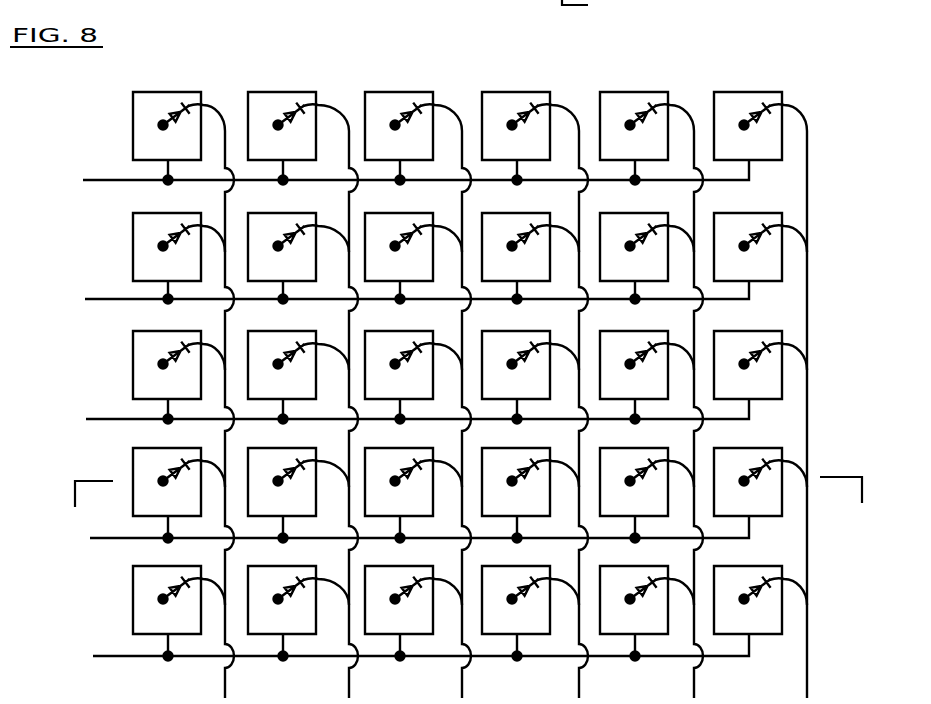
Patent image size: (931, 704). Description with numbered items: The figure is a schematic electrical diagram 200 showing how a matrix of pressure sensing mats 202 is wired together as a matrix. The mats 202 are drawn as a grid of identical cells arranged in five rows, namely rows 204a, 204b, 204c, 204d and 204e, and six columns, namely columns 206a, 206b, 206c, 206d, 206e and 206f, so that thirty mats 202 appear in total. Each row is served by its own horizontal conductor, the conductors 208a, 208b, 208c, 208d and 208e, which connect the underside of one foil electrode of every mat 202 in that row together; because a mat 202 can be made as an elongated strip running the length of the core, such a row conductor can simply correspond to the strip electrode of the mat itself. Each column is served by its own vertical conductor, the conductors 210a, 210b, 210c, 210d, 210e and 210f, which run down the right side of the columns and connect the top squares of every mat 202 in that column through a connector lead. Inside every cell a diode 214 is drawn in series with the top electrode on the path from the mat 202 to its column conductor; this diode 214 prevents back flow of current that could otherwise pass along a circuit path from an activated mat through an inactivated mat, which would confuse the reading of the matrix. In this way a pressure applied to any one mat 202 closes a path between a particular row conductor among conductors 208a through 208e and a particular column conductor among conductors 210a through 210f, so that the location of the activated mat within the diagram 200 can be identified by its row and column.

The schematic electrical diagram 200 is at (834, 164).
The mat 202 is at (140, 108).
The row 204a is at (122, 137).
The row 204b is at (127, 241).
The row 204c is at (136, 362).
The row 204d is at (132, 471).
The row 204e is at (136, 606).
The column 206a is at (165, 89).
The column 206b is at (270, 89).
The column 206c is at (384, 89).
The column 206d is at (497, 89).
The column 206e is at (613, 89).
The column 206f is at (731, 89).
The conductor 208a is at (104, 178).
The conductor 208b is at (108, 298).
The conductor 208c is at (120, 420).
The conductor 208d is at (118, 543).
The conductor 208e is at (118, 652).
The conductor 210a is at (228, 690).
The conductor 210b is at (352, 690).
The conductor 210c is at (465, 690).
The conductor 210d is at (582, 690).
The conductor 210e is at (697, 690).
The conductor 210f is at (810, 690).
The diode 214 is at (178, 128).